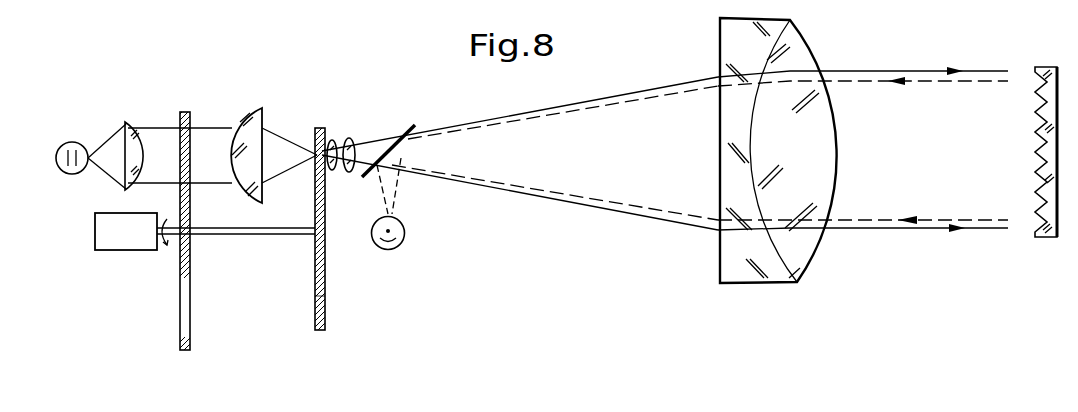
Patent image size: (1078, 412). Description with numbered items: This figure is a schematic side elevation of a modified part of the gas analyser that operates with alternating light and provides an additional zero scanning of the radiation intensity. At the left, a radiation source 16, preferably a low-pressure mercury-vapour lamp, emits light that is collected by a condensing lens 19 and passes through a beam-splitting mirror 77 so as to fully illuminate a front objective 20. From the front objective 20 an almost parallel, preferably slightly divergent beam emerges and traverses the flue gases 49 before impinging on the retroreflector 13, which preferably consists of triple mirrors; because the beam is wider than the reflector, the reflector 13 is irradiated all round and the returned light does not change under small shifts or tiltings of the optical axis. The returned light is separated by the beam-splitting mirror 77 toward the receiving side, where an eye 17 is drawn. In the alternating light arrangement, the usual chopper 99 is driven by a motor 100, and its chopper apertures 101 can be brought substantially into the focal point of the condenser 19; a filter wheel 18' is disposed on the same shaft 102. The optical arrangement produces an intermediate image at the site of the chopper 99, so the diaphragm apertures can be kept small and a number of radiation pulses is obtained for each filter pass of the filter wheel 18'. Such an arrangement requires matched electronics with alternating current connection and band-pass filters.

The radiation source 16 is at (83, 142).
The condensing lens 19 is at (223, 108).
The motor 100 is at (95, 228).
The shaft 102 is at (227, 228).
The filter wheel 18' is at (219, 231).
The chopper 99 is at (325, 267).
The chopper apertures 101 is at (315, 300).
The beam-splitting mirror 77 is at (413, 122).
The observer eye 17 is at (405, 234).
The front objective 20 is at (817, 53).
The flue gases 49 is at (949, 152).
The retroreflector 13 is at (1036, 67).